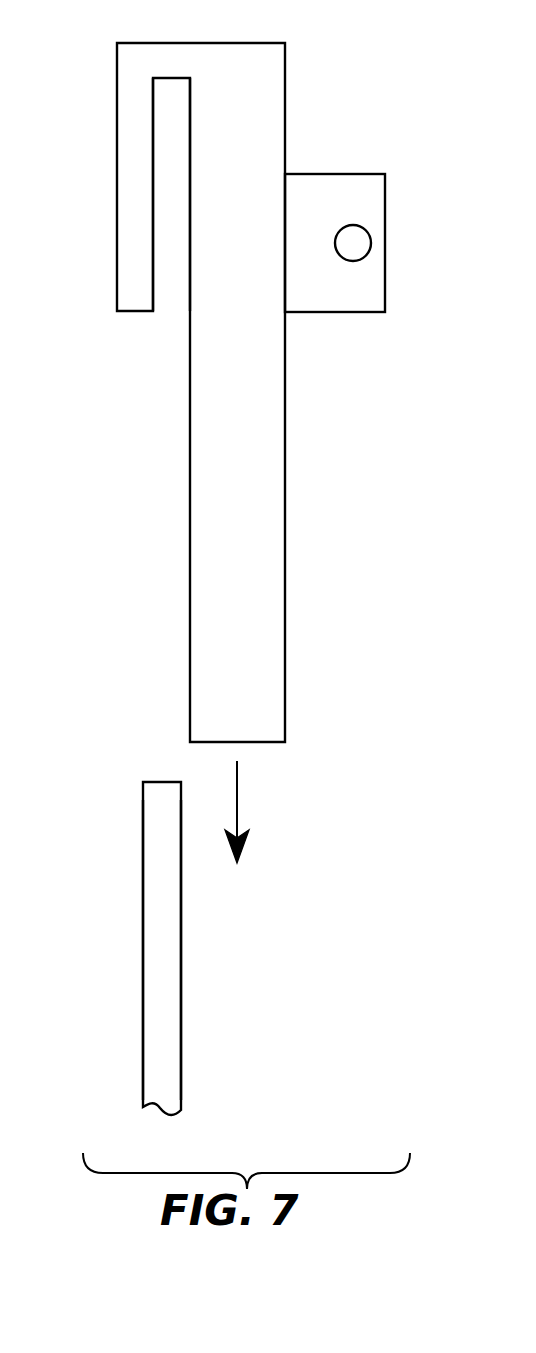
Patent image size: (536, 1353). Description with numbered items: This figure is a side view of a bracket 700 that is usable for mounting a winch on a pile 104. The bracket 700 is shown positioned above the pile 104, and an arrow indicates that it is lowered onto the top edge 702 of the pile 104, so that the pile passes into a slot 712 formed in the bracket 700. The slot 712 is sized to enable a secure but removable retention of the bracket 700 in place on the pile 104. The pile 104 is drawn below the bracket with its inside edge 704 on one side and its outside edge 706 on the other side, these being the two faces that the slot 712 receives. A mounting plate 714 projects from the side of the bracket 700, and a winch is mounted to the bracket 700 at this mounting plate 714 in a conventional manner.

The bracket 700 is at (218, 43).
The slot 712 is at (178, 312).
The mounting plate 714 is at (386, 274).
The top edge 702 is at (170, 929).
The pile 104 is at (181, 990).
The inside edge 704 is at (143, 1085).
The outside edge 706 is at (181, 1085).